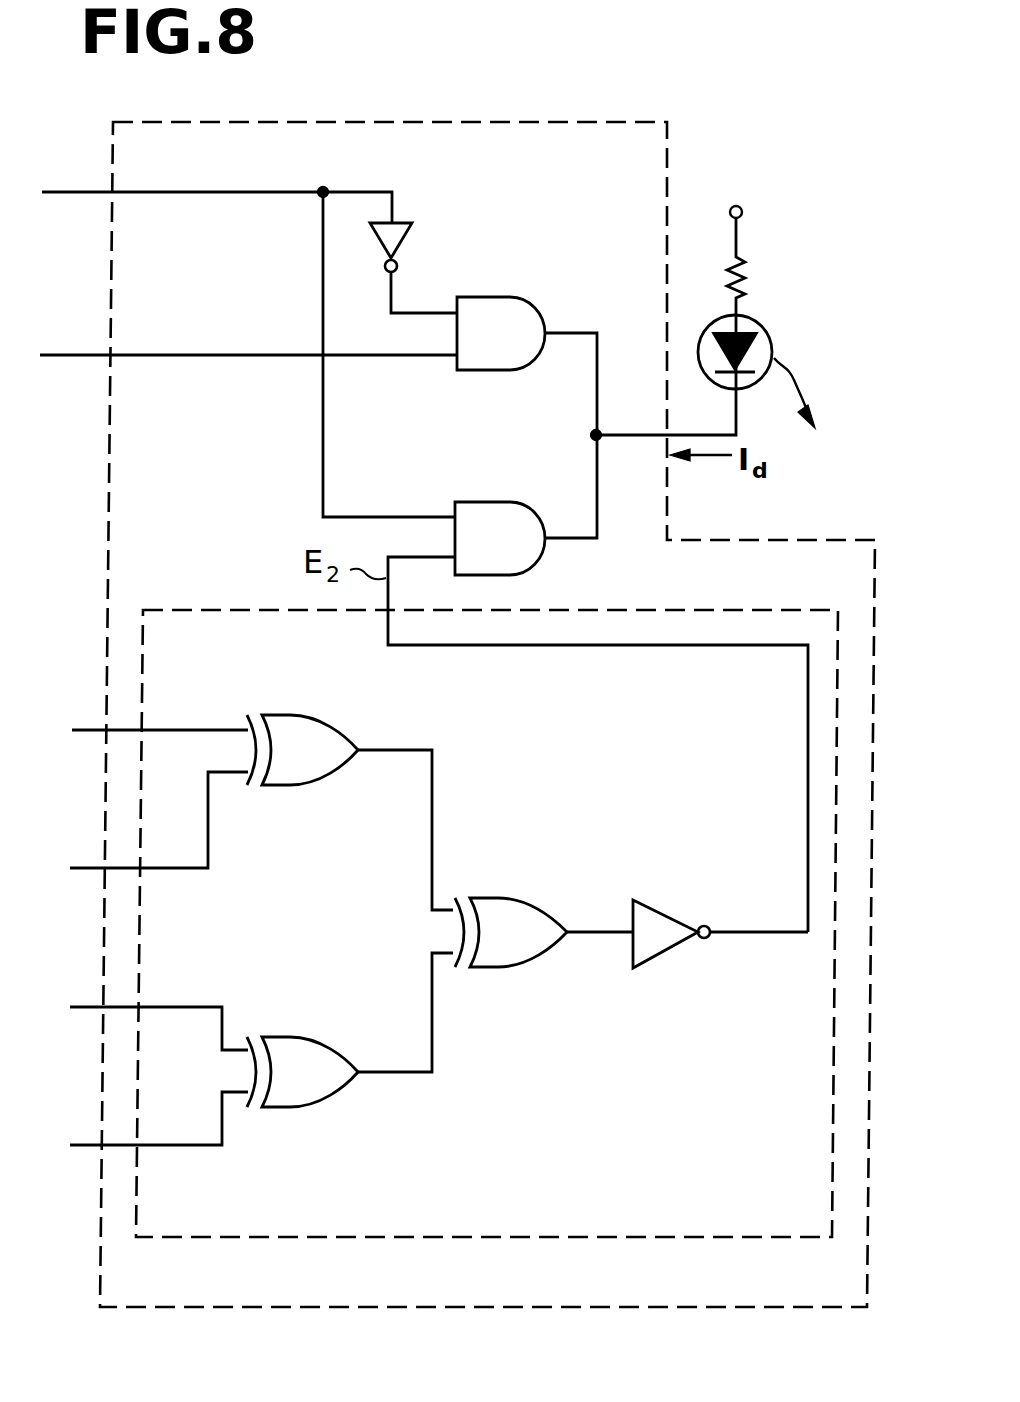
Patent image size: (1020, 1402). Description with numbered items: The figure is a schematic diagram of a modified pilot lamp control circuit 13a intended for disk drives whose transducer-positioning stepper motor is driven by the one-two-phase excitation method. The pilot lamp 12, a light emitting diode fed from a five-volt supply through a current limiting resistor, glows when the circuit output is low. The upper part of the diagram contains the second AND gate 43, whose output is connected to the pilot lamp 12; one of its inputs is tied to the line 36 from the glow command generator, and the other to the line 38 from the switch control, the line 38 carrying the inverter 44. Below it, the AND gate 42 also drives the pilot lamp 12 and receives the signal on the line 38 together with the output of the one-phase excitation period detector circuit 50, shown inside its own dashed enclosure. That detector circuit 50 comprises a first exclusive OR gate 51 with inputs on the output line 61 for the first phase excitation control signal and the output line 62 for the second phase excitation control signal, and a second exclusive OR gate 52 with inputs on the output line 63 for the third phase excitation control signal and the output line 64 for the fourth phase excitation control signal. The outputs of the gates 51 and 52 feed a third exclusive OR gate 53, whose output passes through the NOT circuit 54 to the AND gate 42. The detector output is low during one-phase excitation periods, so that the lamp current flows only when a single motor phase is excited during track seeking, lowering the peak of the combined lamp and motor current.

The modified pilot lamp control circuit 13a is at (672, 185).
The pilot lamp 12 is at (772, 341).
The line 36 is at (70, 355).
The line 38 is at (70, 190).
The AND gate 42 is at (483, 502).
The second AND gate 43 is at (527, 298).
The inverter 44 is at (405, 236).
The one-phase excitation period detector circuit 50 is at (180, 608).
The first exclusive OR gate 51 is at (352, 738).
The second exclusive OR gate 52 is at (346, 1054).
The third exclusive OR gate 53 is at (560, 915).
The NOT circuit 54 is at (684, 916).
The output line 61 is at (90, 734).
The output line 62 is at (90, 872).
The output line 63 is at (82, 1010).
The output line 64 is at (82, 1148).